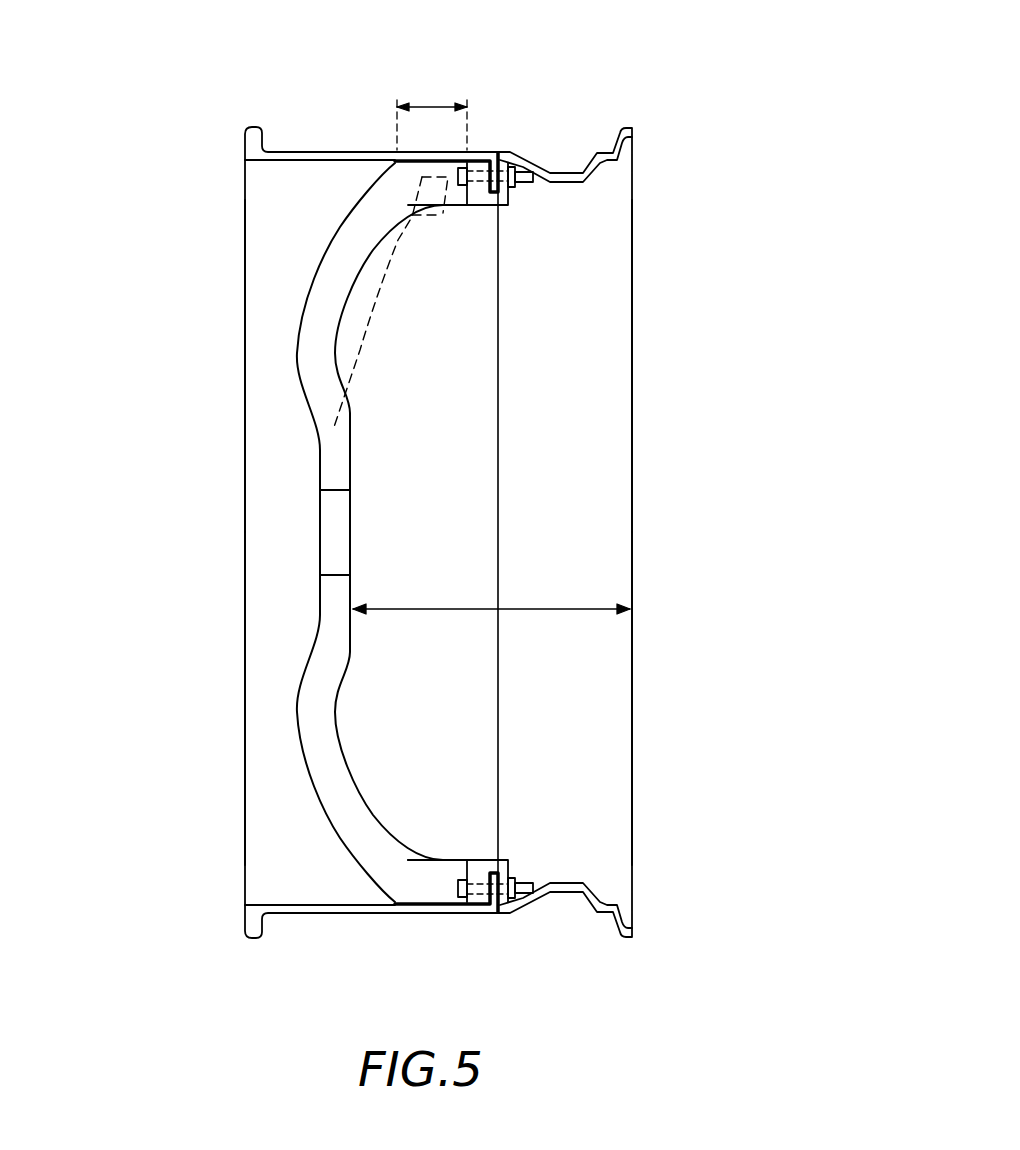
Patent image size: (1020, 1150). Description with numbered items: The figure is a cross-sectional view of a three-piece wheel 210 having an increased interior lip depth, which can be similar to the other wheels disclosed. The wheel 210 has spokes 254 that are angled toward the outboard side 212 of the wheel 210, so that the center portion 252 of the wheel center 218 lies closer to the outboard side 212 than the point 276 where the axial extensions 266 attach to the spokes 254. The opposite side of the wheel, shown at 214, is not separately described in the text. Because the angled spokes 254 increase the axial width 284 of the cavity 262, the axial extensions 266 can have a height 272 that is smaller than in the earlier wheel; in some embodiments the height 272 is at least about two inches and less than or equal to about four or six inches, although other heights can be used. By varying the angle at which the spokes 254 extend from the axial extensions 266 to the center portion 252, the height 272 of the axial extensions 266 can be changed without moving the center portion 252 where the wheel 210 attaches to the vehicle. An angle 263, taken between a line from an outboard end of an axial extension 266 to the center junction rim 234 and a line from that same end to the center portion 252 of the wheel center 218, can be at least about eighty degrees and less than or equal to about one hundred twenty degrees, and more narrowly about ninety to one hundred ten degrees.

The three-piece wheel 210 is at (281, 80).
The outboard side 212 is at (168, 461).
The inboard rim portion 214 is at (722, 521).
The wheel center 218 is at (340, 790).
The center junction rim 234 is at (478, 207).
The center portion 252 is at (331, 615).
The spokes 254 is at (317, 307).
The cavity 262 is at (454, 469).
The angle 263 is at (437, 210).
The axial extensions 266 is at (443, 882).
The height 272 is at (433, 107).
The point 276 is at (407, 877).
The axial width 284 is at (570, 610).